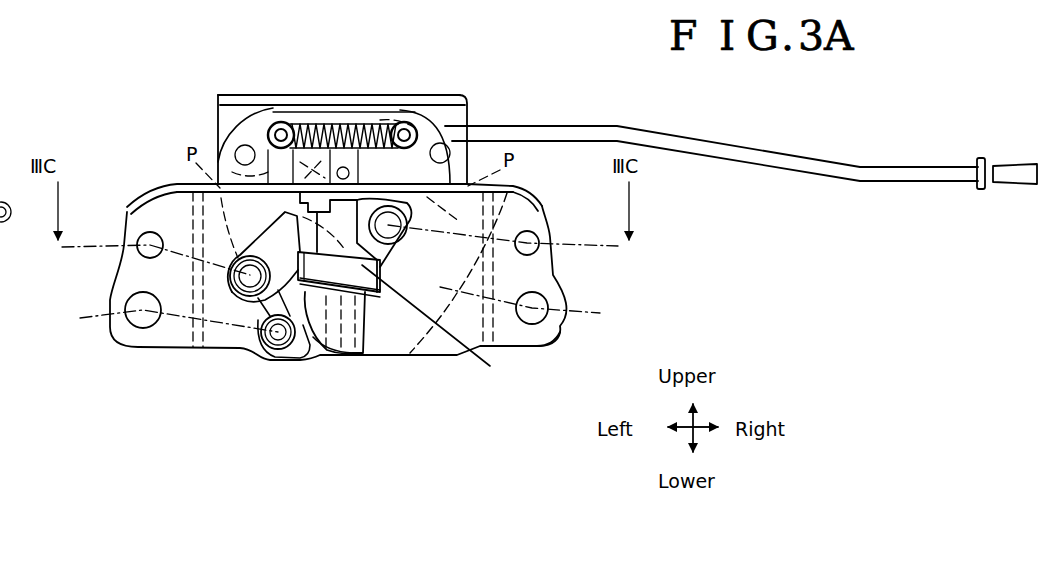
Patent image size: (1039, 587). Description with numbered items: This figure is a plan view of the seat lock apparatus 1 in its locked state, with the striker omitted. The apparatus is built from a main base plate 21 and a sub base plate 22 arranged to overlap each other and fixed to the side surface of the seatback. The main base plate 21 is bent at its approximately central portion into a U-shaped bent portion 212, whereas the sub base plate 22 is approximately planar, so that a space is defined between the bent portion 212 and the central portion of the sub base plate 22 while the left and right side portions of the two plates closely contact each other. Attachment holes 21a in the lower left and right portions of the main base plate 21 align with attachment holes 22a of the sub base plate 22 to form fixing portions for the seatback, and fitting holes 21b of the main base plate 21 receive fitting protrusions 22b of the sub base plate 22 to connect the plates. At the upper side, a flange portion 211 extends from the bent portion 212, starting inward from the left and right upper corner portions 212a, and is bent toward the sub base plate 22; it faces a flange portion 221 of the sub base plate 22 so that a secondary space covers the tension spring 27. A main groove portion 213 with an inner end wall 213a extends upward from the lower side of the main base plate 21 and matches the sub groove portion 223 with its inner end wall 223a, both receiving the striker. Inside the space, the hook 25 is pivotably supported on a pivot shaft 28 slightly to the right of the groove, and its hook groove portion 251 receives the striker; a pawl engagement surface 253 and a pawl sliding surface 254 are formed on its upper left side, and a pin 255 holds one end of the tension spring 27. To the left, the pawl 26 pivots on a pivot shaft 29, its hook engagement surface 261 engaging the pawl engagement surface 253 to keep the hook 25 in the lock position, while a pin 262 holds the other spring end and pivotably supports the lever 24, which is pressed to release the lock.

The lock apparatus 1 is at (504, 100).
The main base plate 21 is at (132, 197).
The attachment holes 21a is at (128, 340).
The fitting holes 21b is at (136, 239).
The sub base plate 22 is at (122, 282).
The attachment holes 22a is at (340, 310).
The fitting protrusions 22b is at (340, 250).
The lever 24 is at (556, 126).
The hook 25 is at (498, 356).
The pawl 26 is at (236, 128).
The tension spring 27 is at (375, 112).
The pivot shaft 28 is at (541, 348).
The pivot shaft 29 is at (270, 353).
The flange portion 211 is at (262, 93).
The bent portion 212 is at (545, 201).
The upper corner portions 212a is at (196, 183).
The main base plate groove portion 213 is at (330, 362).
The inner end wall 213a is at (342, 358).
The flange portion 221 is at (312, 110).
The sub base plate groove portion 223 is at (412, 336).
The inner end wall 223a is at (350, 355).
The hook groove portion 251 is at (434, 330).
The pawl engagement surface 253 is at (222, 330).
The pawl sliding surface 254 is at (174, 348).
The pin 255 is at (418, 112).
The hook engagement surface 261 is at (237, 126).
The pin 262 is at (285, 105).